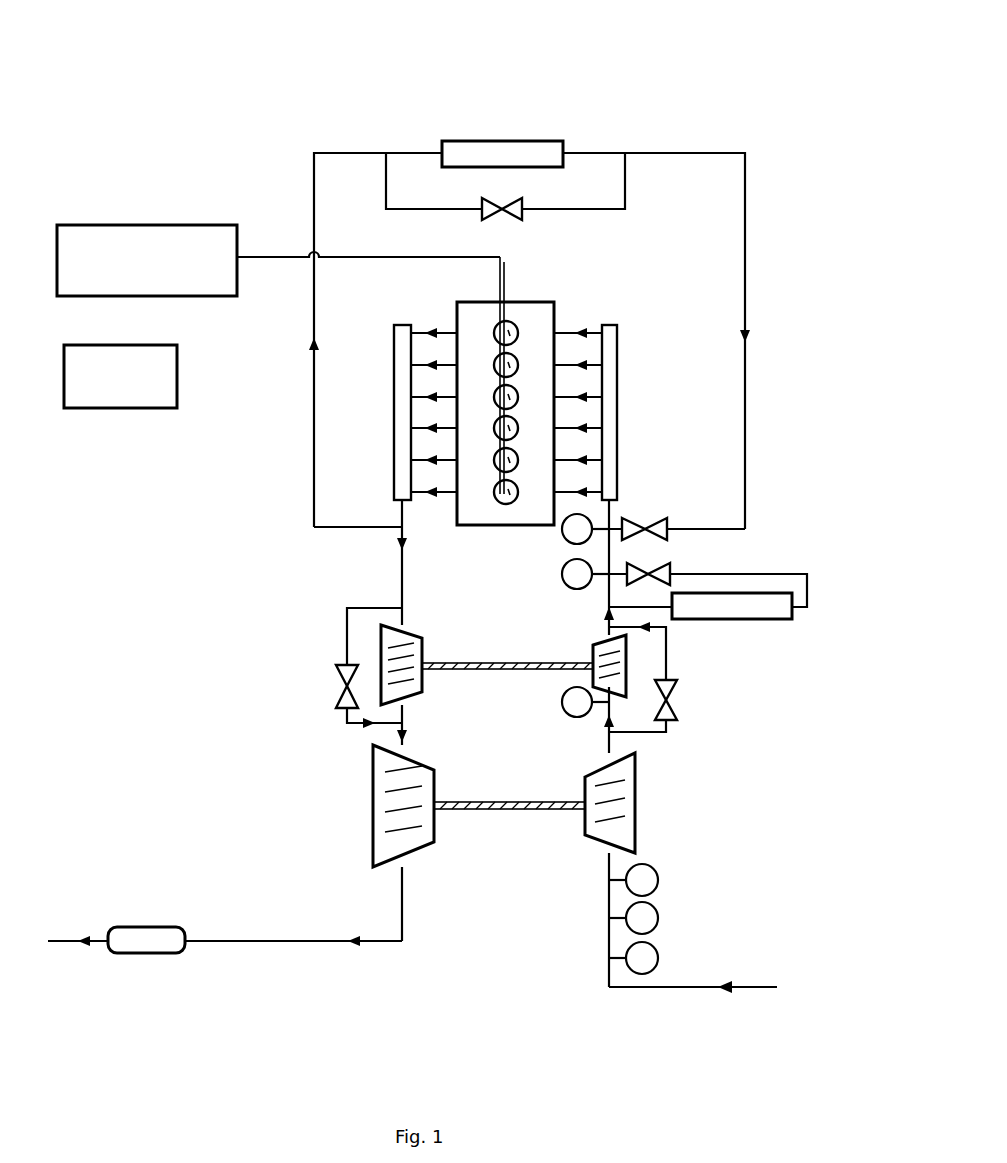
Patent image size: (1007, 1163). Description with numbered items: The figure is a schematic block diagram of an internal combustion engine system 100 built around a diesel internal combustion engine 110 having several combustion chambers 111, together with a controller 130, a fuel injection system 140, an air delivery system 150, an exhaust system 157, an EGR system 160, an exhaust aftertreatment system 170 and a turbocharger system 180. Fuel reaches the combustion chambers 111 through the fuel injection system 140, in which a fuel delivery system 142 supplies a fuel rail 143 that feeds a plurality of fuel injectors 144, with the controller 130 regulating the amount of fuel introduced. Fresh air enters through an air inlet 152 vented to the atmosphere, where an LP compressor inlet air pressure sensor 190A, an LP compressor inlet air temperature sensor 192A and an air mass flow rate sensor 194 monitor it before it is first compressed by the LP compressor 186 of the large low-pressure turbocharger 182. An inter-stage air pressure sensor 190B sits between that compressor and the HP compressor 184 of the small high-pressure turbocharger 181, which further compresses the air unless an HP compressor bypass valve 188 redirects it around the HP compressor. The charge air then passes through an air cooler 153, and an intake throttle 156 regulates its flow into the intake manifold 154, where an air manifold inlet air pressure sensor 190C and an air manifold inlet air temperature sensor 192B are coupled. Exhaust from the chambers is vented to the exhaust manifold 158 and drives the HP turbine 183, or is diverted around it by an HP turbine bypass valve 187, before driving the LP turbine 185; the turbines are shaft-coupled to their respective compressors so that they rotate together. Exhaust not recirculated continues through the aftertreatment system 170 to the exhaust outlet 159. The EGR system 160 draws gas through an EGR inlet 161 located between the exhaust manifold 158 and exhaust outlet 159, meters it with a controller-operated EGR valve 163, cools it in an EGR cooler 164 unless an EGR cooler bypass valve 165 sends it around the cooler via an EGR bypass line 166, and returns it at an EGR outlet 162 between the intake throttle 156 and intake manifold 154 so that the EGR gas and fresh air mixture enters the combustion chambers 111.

The internal combustion engine system 100 is at (104, 62).
The diesel internal combustion engine 110 is at (527, 296).
The combustion chambers 111 is at (507, 500).
The controller 130 is at (120, 376).
The fuel injection system 140 is at (302, 230).
The fuel delivery system 142 is at (278, 260).
The fuel rail 143 is at (499, 282).
The fuel injectors 144 is at (521, 335).
The air delivery system 150 is at (809, 1020).
The air inlet 152 is at (758, 987).
The air cooler 153 is at (757, 620).
The intake manifold 154 is at (617, 347).
The intake throttle 156 is at (665, 566).
The exhaust system 157 is at (224, 628).
The exhaust manifold 158 is at (394, 347).
The exhaust outlet 159 is at (58, 941).
The EGR system 160 is at (621, 112).
The EGR inlet 161 is at (400, 545).
The EGR outlet 162 is at (611, 522).
The EGR valve 163 is at (662, 518).
The EGR cooler 164 is at (530, 140).
The EGR cooler bypass valve 165 is at (482, 212).
The EGR bypass line 166 is at (596, 212).
The exhaust aftertreatment system 170 is at (150, 927).
The turbocharger system 180 is at (518, 908).
The high-pressure turbocharger 181 is at (498, 677).
The low-pressure turbocharger 182 is at (484, 822).
The HP turbine 183 is at (422, 640).
The HP compressor 184 is at (592, 648).
The LP turbine 185 is at (436, 776).
The LP compressor 186 is at (586, 782).
The HP turbine bypass valve 187 is at (336, 666).
The HP compressor bypass valve 188 is at (676, 704).
The LP compressor inlet air pressure sensor 190A is at (656, 910).
The inter-stage air pressure sensor 190B is at (562, 708).
The air manifold inlet air pressure sensor 190C is at (562, 541).
The LP compressor inlet air temperature sensor 192A is at (656, 950).
The air manifold inlet air temperature sensor 192B is at (562, 572).
The air mass flow rate sensor 194 is at (656, 872).